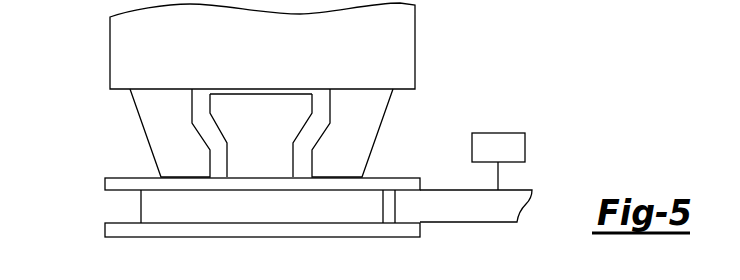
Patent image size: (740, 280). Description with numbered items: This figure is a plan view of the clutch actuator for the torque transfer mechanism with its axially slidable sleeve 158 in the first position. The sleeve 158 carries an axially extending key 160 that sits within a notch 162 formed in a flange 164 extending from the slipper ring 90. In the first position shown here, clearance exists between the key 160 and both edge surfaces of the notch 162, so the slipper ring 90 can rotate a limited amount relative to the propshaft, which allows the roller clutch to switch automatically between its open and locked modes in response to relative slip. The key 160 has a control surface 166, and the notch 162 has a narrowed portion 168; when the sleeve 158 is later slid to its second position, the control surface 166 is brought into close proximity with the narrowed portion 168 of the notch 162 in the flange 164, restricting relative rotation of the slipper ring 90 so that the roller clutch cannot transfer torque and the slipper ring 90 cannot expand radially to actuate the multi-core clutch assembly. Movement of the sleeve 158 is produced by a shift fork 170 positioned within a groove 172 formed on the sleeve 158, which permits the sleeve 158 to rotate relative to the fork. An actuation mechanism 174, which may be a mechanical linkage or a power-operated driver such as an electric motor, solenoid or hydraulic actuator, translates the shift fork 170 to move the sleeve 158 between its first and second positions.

The slipper ring 90 is at (120, 63).
The axially slidable sleeve 158 is at (88, 233).
The axially extending key 160 is at (227, 100).
The notch 162 is at (330, 105).
The flange 164 is at (149, 138).
The control surface 166 is at (207, 103).
The narrowed portion 168 is at (312, 162).
The shift fork 170 is at (459, 210).
The groove 172 is at (127, 193).
The actuation mechanism 174 is at (495, 133).